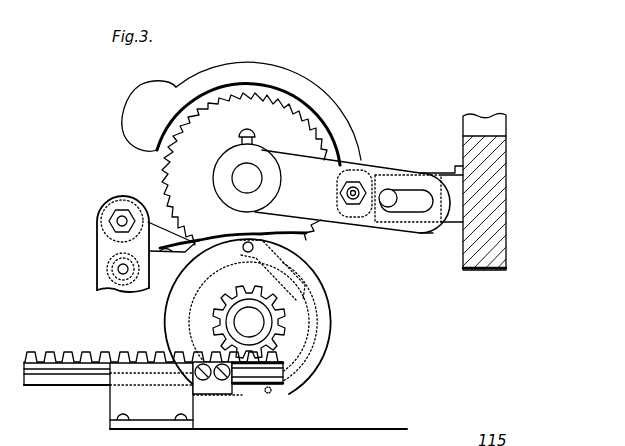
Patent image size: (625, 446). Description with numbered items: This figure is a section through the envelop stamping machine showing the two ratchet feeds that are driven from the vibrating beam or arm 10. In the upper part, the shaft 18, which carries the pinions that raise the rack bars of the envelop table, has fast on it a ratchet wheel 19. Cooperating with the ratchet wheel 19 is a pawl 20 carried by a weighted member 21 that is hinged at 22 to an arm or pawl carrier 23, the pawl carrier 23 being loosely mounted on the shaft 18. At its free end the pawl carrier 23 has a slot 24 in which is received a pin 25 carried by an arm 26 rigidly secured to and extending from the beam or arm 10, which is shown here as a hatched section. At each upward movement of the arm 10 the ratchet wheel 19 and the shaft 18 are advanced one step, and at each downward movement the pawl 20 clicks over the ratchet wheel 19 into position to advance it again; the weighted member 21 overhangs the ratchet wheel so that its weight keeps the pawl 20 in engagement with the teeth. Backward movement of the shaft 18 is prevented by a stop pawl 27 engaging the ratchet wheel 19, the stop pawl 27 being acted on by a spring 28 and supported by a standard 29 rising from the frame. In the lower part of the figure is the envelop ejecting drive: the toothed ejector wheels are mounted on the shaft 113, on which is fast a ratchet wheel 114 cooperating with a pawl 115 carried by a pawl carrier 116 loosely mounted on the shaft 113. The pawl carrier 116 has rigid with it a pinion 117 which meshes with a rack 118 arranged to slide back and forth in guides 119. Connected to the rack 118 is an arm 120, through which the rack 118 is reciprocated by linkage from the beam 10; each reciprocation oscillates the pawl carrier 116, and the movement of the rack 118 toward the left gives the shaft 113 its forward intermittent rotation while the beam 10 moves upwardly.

The beam or arm 10 is at (509, 197).
The shaft 18 is at (242, 175).
The ratchet wheel 19 is at (222, 113).
The pawl 20 is at (320, 127).
The weighted member 21 is at (278, 75).
The hinge 22 is at (355, 188).
The arm or pawl carrier 23 is at (363, 217).
The slot 24 is at (420, 205).
The pin 25 is at (388, 197).
The arm 26 is at (449, 185).
The stop pawl 27 is at (149, 240).
The spring 28 is at (165, 262).
The standard 29 is at (100, 289).
The shaft 113 is at (255, 322).
The ratchet wheel 114 is at (290, 307).
The pawl 115 is at (246, 266).
The pawl carrier 116 is at (310, 373).
The pinion 117 is at (283, 338).
The rack 118 is at (58, 380).
The guides 119 is at (128, 392).
The arm 120 is at (200, 393).